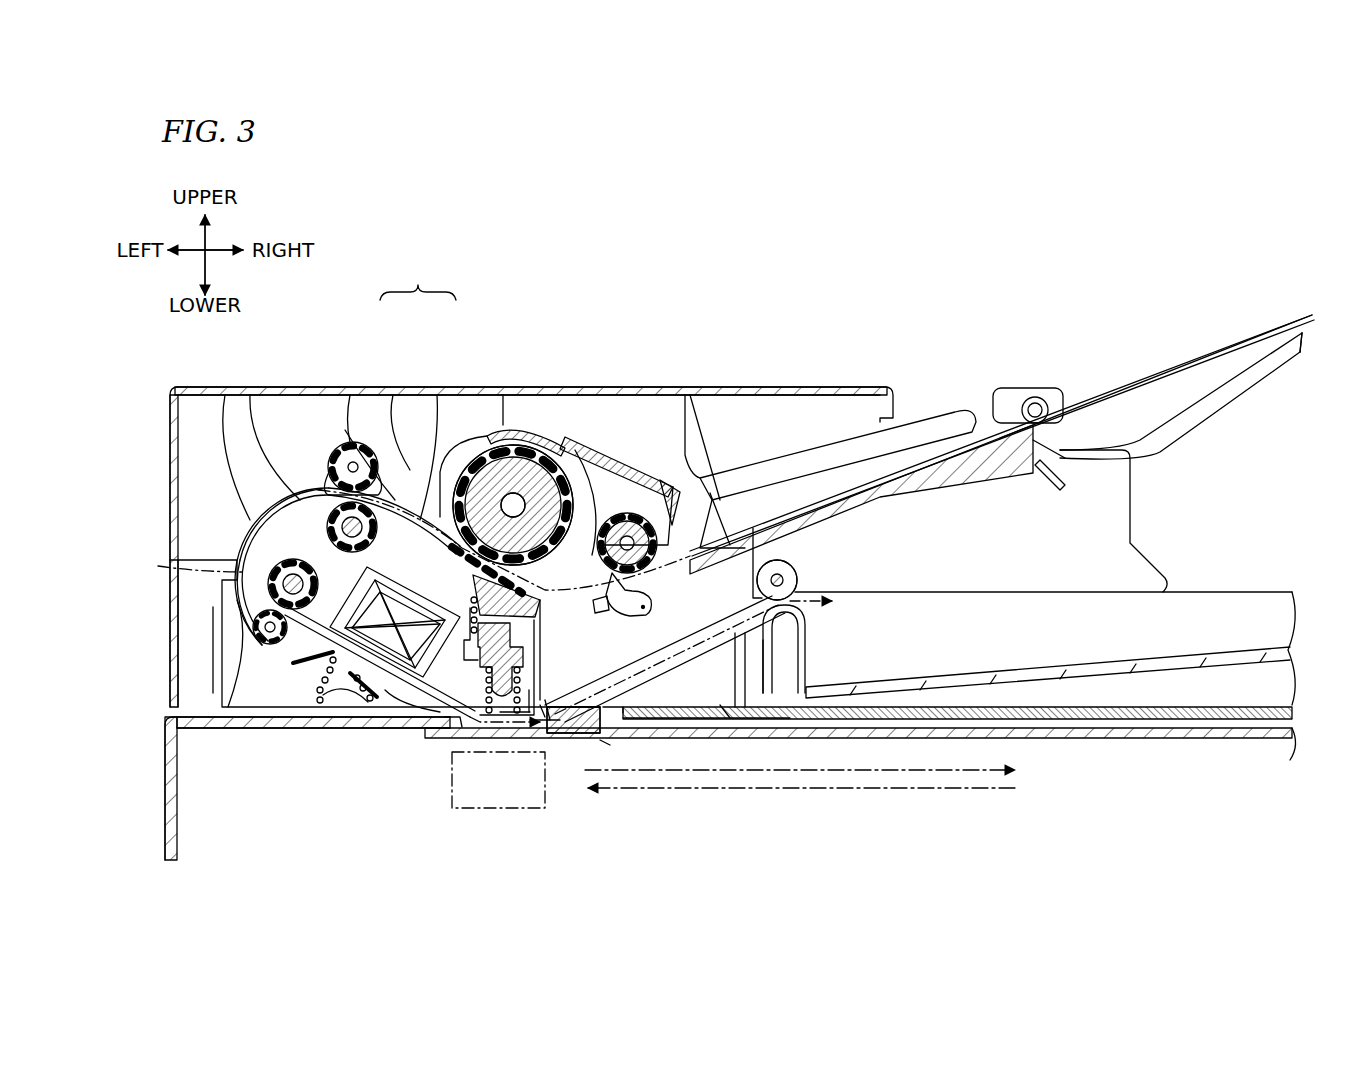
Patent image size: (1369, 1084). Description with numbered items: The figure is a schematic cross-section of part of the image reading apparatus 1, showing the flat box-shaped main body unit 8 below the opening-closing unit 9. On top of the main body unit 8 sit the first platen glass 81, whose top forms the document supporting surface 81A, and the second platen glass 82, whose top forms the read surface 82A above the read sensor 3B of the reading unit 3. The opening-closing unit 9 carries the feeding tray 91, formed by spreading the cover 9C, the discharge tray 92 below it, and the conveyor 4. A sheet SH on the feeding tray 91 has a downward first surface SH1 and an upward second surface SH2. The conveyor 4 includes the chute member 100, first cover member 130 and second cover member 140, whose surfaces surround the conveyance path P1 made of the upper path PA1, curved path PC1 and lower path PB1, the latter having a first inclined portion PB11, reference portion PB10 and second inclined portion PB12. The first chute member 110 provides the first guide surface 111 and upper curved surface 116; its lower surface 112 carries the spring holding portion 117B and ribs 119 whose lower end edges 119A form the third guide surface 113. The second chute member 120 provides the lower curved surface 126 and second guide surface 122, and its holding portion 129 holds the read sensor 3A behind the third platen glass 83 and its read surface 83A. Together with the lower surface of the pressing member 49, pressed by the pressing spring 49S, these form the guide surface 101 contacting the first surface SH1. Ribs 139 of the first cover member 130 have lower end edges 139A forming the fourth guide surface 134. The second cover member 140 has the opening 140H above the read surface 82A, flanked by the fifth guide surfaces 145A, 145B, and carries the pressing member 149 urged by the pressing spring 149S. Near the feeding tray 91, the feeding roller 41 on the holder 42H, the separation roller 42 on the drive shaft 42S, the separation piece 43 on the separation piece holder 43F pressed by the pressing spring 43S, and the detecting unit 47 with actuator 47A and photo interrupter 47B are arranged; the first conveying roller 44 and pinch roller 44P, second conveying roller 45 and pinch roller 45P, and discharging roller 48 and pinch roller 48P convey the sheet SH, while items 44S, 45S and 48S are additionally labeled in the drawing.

The image reading apparatus 1 is at (793, 300).
The reading unit 3 is at (1066, 811).
The read sensor 3A is at (440, 580).
The read sensor 3B is at (505, 720).
The conveyor 4 is at (658, 428).
The main body unit 8 is at (160, 785).
The opening-closing unit 9 is at (160, 418).
The cover 9C is at (1215, 405).
The feeding roller 41 is at (690, 430).
The separation roller 42 is at (520, 450).
The drive shaft 42S is at (505, 460).
The holder 42H is at (516, 500).
The separation piece 43 is at (615, 515).
The separation piece holder 43F is at (625, 490).
The pressing spring 43S is at (545, 722).
The first conveying roller 44 is at (312, 485).
The pinch roller 44P is at (350, 393).
The guide surface 44S is at (300, 490).
The second conveying roller 45 is at (255, 632).
The pinch roller 45P is at (292, 645).
The pinch roller surface 45S is at (262, 560).
The detecting unit 47 is at (655, 605).
The actuator 47A is at (640, 618).
The photo interrupter 47B is at (573, 695).
The discharging roller 48 is at (800, 580).
The roller surface 48S is at (790, 570).
The pinch roller 48P is at (806, 620).
The pressing member 49 is at (470, 770).
The pressing spring 49S is at (548, 722).
The first platen glass 81 is at (1168, 740).
The document supporting surface 81A is at (1175, 720).
The second platen glass 82 is at (490, 715).
The read surface 82A is at (470, 730).
The third platen glass 83 is at (362, 625).
The read surface 83A is at (360, 660).
The feeding tray 91 is at (1180, 368).
The discharge tray 92 is at (1245, 645).
The chute member 100 is at (418, 282).
The guide surface 101 is at (250, 392).
The first chute member 110 is at (393, 393).
The first guide surface 111 is at (559, 650).
The lower surface 112 is at (735, 540).
The third guide surface 113 is at (680, 722).
The upper curved surface 116 is at (225, 395).
The spring holding portion 117B is at (512, 728).
The ribs 119 is at (752, 575).
The lower end edge 119A is at (735, 670).
The second chute member 120 is at (437, 393).
The second guide surface 122 is at (320, 650).
The lower curved surface 126 is at (225, 605).
The holding portion 129 is at (330, 520).
The first cover member 130 is at (297, 385).
The fourth guide surface 134 is at (338, 450).
The ribs 139 is at (470, 435).
The lower end edges 139A is at (395, 460).
The second cover member 140 is at (1200, 640).
The opening 140H is at (452, 722).
The fifth guide surface 145A is at (400, 705).
The fifth guide surface 145B is at (800, 655).
The pressing member 149 is at (318, 700).
The pressing spring 149S is at (355, 690).
The conveyance path P1 is at (826, 602).
The upper path PA1 is at (740, 540).
The lower path PB1 is at (610, 748).
The reference portion PB10 is at (540, 730).
The first inclined portion PB11 is at (420, 712).
The second inclined portion PB12 is at (730, 722).
The curved path PC1 is at (158, 565).
The sheet SH is at (1308, 314).
The first surface SH1 is at (1295, 338).
The second surface SH2 is at (1290, 325).